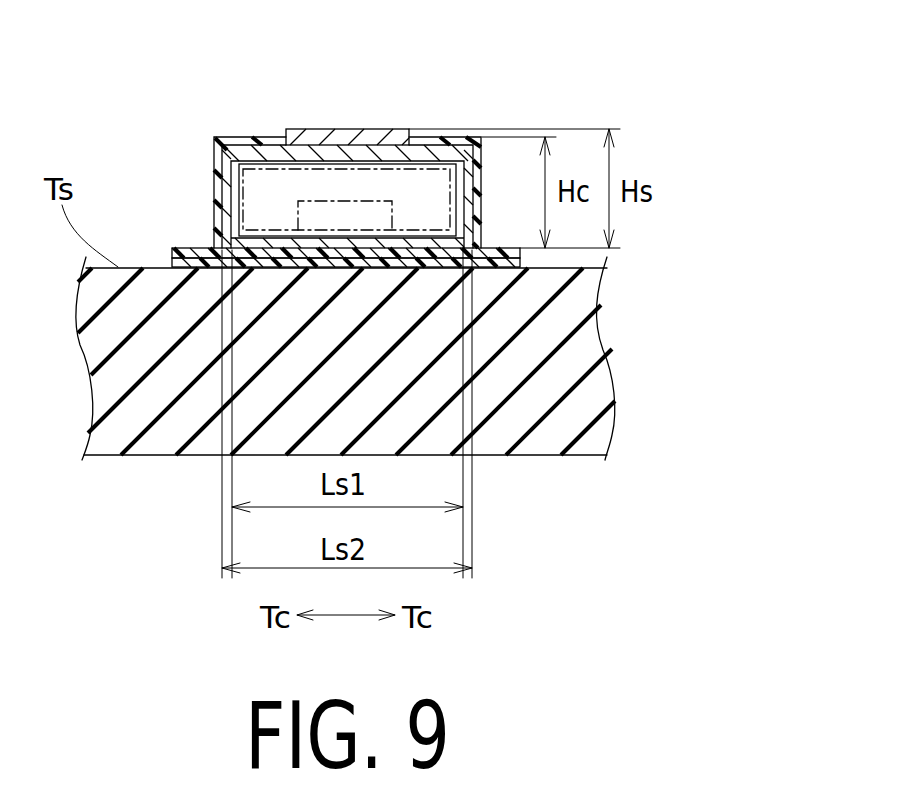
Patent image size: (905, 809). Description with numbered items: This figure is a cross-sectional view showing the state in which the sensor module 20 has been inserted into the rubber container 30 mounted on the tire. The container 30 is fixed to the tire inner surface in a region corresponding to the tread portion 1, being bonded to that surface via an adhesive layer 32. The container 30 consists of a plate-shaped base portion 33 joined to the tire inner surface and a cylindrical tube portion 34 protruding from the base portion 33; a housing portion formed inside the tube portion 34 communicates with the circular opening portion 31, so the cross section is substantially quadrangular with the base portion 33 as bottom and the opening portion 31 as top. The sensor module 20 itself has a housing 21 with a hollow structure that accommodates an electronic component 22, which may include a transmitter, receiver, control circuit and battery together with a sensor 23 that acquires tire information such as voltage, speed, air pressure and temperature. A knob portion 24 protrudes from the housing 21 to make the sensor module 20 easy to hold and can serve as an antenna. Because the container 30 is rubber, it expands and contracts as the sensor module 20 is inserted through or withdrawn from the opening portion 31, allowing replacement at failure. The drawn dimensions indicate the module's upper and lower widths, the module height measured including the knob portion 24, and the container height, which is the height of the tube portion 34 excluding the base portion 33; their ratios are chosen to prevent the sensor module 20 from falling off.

The tread portion 1 is at (137, 458).
The sensor module 20 is at (329, 117).
The housing 21 is at (295, 158).
The electronic component 22 is at (386, 192).
The sensor 23 is at (345, 217).
The knob portion 24 is at (397, 133).
The container 30 is at (351, 141).
The opening portion 31 is at (266, 150).
The adhesive layer 32 is at (185, 263).
The base portion 33 is at (203, 248).
The tube portion 34 is at (220, 182).